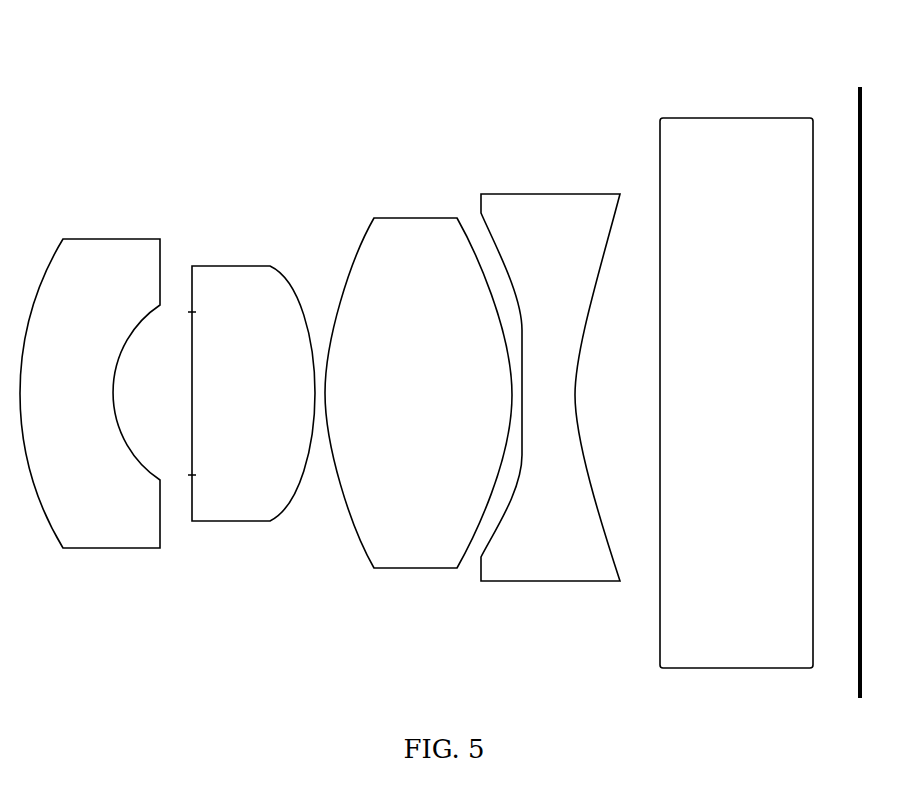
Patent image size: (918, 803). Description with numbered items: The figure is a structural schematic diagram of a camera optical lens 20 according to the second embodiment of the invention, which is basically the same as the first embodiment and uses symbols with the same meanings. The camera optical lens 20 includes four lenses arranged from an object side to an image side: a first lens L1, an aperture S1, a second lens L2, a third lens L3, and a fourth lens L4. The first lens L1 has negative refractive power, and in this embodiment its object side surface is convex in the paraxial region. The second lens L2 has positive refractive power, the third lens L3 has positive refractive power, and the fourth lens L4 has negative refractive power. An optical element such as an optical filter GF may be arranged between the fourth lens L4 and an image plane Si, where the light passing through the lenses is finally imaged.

The camera optical lens 20 is at (451, 31).
The first lens L1 is at (90, 379).
The aperture S1 is at (179, 382).
The second lens L2 is at (253, 379).
The third lens L3 is at (418, 379).
The fourth lens L4 is at (550, 375).
The optical filter GF is at (736, 380).
The image plane Si is at (858, 381).